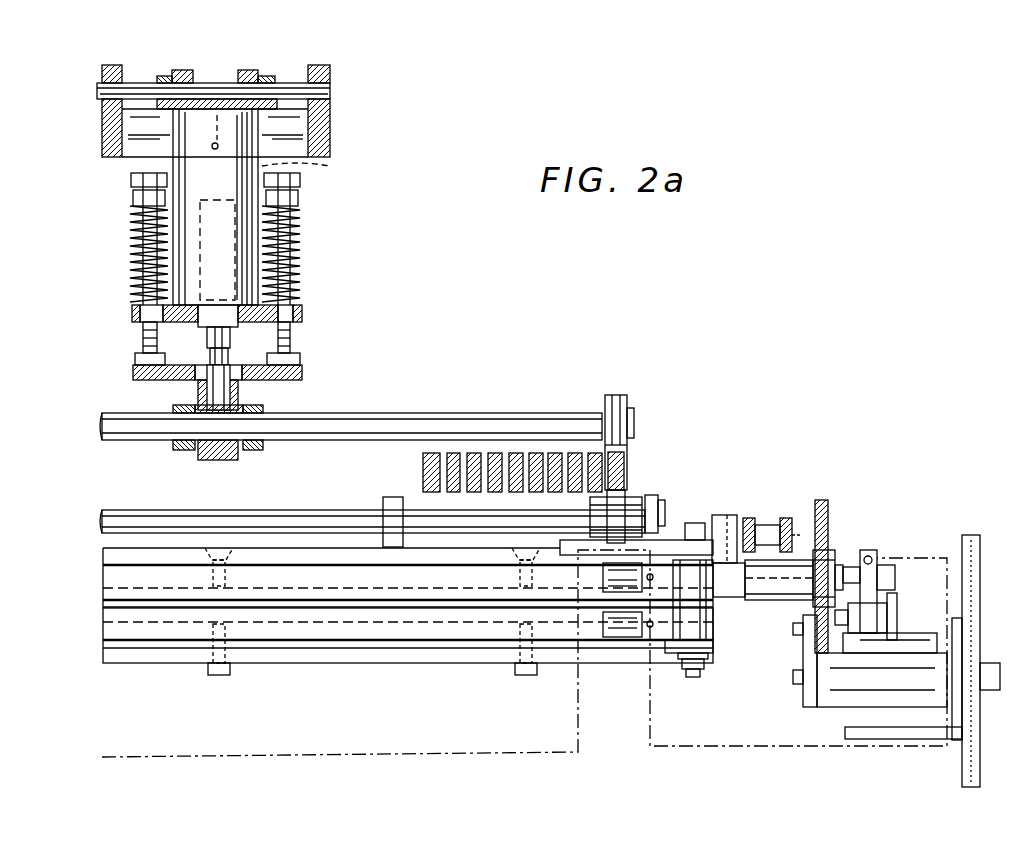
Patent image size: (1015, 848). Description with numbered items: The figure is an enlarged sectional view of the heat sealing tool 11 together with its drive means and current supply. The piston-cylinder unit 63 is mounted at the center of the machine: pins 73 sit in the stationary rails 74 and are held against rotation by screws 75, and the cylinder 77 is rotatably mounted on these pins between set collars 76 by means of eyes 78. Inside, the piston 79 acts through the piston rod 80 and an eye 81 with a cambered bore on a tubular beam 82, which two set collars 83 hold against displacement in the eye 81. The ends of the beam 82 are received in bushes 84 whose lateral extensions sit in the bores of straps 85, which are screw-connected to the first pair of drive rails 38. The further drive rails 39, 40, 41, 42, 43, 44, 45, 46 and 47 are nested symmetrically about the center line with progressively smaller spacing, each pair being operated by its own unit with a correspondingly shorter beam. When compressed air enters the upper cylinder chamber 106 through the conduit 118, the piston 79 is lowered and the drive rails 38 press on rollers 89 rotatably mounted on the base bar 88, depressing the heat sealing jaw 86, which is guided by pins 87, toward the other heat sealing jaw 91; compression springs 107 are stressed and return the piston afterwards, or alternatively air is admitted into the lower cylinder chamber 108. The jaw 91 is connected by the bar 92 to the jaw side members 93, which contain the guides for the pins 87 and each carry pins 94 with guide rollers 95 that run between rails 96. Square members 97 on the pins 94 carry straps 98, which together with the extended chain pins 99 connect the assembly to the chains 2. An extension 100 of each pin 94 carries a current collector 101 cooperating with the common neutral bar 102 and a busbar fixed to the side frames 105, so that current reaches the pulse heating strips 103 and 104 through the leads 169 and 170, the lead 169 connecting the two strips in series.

The chain 2 is at (765, 520).
The heat sealing tool 11 is at (362, 668).
The drive rail 38 is at (626, 455).
The drive rail 39 is at (595, 453).
The drive rail 40 is at (575, 453).
The drive rail 41 is at (555, 453).
The drive rail 42 is at (536, 453).
The drive rail 43 is at (516, 453).
The drive rail 44 is at (495, 453).
The drive rail 45 is at (473, 453).
The drive rail 46 is at (452, 453).
The drive rail 47 is at (423, 470).
The piston-cylinder unit 63 is at (338, 158).
The pin 73 is at (328, 90).
The stationary rail 74 is at (102, 122).
The screw 75 is at (310, 70).
The set collar 76 is at (160, 78).
The cylinder 77 is at (168, 148).
The eye 78 is at (250, 72).
The piston 79 is at (214, 198).
The piston rod 80 is at (230, 352).
The eye 81 is at (212, 460).
The tubular beam 82 is at (112, 415).
The set collar 83 is at (173, 408).
The bush 84 is at (617, 397).
The strap 85 is at (634, 410).
The heat sealing jaw 86 is at (305, 545).
The pin 87 is at (706, 665).
The base bar 88 is at (245, 555).
The roller 89 is at (626, 498).
The heat sealing jaw 91 is at (103, 630).
The bar 92 is at (143, 656).
The jaw side member 93 is at (712, 635).
The pin 94 is at (841, 565).
The guide roller 95 is at (830, 552).
The rail 96 is at (820, 500).
The square member 97 is at (738, 592).
The strap 98 is at (716, 513).
The extended chain pin 99 is at (728, 525).
The extension 100 is at (880, 572).
The current collector 101 is at (878, 560).
The neutral bar 102 is at (880, 600).
The pulse heating strip 103 is at (650, 560).
The pulse heating strip 104 is at (650, 632).
The side frame 105 is at (898, 752).
The upper cylinder chamber 106 is at (292, 170).
The compression spring 107 is at (130, 225).
The lower cylinder chamber 108 is at (130, 272).
The conduit 118 is at (214, 98).
The lead 169 is at (385, 758).
The lead 170 is at (700, 758).